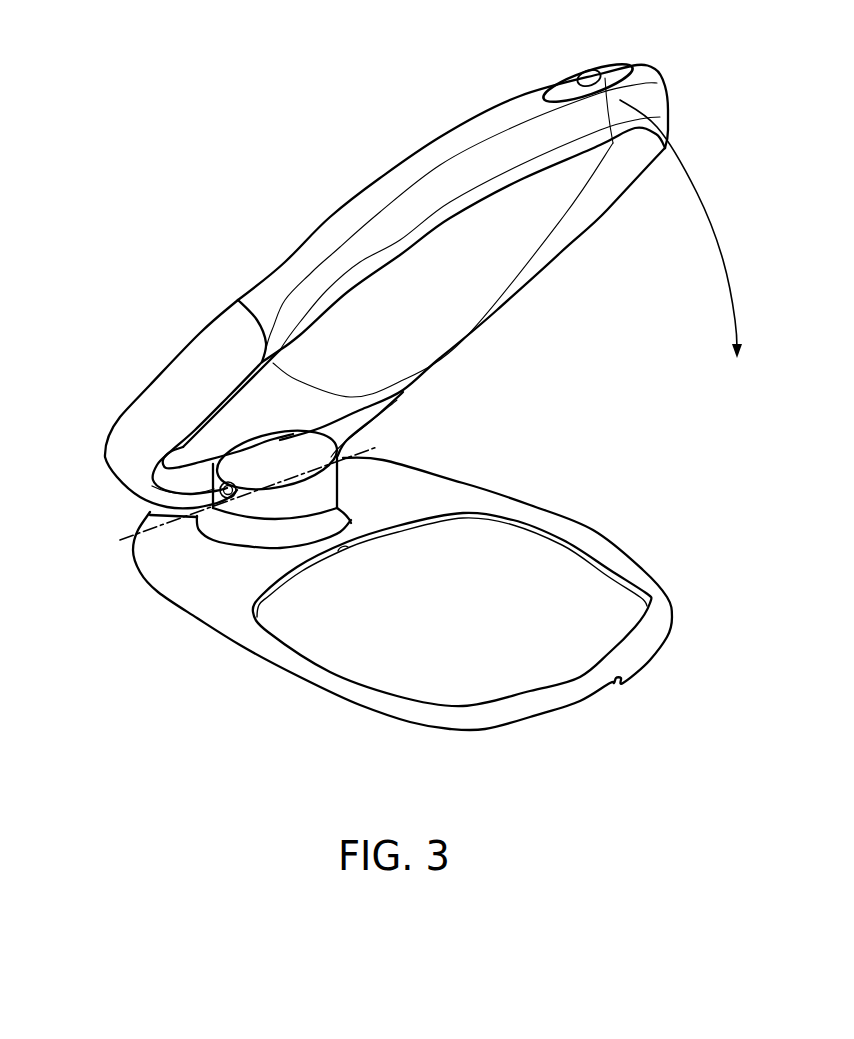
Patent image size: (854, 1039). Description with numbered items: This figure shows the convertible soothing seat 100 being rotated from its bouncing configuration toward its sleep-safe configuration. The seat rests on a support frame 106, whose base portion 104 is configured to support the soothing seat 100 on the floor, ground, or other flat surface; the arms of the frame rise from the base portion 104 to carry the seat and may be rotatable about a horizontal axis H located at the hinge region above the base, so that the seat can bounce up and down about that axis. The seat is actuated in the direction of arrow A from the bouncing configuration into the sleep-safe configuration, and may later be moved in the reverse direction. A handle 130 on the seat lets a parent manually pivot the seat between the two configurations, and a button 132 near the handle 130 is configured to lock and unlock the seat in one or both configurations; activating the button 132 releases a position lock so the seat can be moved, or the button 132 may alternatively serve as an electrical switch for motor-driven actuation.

The convertible soothing seat 100 is at (133, 80).
The base portion 104 is at (177, 597).
The support frame 106 is at (173, 402).
The handle 130 is at (563, 92).
The button 132 is at (591, 80).
The arrow A is at (681, 229).
The horizontal axis H is at (224, 499).